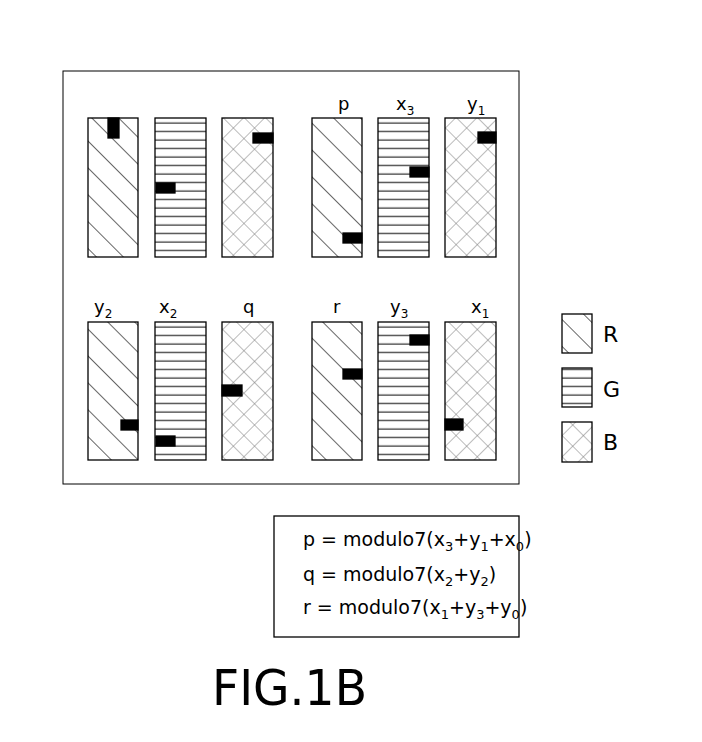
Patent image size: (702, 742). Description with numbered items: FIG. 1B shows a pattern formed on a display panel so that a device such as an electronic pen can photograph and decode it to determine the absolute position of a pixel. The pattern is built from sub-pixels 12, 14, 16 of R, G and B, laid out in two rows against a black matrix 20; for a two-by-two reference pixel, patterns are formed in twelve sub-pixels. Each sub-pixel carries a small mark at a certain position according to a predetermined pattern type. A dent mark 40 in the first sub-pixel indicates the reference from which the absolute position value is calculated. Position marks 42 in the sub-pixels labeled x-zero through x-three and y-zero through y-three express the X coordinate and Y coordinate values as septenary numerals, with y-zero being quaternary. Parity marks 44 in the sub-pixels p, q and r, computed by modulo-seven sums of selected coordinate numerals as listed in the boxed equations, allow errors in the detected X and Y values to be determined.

The sub-pixel 12 is at (100, 118).
The sub-pixel 14 is at (180, 118).
The sub-pixel 16 is at (247, 118).
The black matrix 20 is at (289, 87).
The dent mark 40 is at (108, 130).
The position marks 42 is at (122, 318).
The parity marks 44 is at (343, 242).